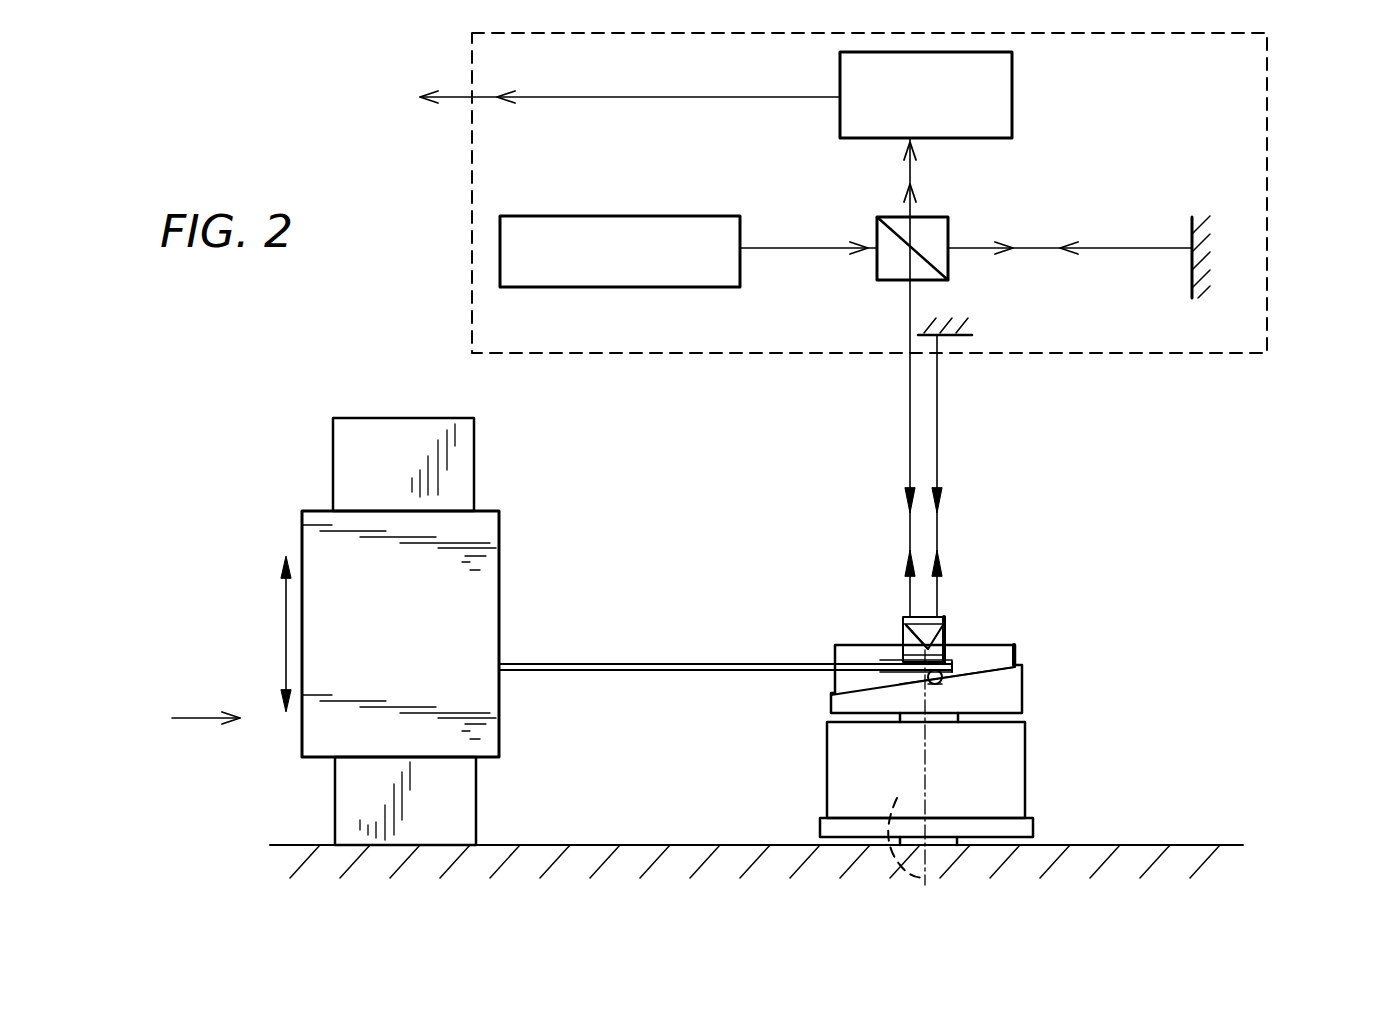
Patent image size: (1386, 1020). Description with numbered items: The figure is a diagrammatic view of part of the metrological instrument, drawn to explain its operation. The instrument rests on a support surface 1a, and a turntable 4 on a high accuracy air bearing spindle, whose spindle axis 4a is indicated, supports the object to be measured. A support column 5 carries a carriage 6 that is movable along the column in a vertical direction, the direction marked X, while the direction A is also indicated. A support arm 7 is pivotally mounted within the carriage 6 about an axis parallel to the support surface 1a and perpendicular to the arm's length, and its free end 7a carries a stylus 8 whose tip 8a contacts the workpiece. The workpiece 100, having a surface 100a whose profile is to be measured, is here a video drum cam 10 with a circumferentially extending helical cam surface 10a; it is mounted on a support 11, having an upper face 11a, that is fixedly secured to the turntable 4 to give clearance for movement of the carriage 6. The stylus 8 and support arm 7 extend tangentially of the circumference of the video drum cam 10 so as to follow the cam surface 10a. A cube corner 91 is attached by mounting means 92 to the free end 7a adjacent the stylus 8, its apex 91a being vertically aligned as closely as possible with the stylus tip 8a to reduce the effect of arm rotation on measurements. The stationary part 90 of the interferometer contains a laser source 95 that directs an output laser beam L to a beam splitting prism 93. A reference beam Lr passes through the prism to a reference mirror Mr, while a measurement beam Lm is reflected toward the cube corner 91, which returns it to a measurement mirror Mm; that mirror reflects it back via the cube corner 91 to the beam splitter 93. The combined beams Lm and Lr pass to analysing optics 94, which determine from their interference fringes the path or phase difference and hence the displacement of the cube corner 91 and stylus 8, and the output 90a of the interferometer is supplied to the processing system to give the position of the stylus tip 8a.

The support surface 1a is at (1183, 843).
The turntable 4 is at (820, 828).
The spindle axis 4a is at (894, 822).
The support column 5 is at (475, 461).
The carriage 6 is at (500, 535).
The support arm 7 is at (722, 680).
The free end of the support arm 7a is at (882, 664).
The stylus 8 is at (940, 672).
The stylus tip 8a is at (947, 655).
The video drum cam 10 is at (1020, 660).
The helical cam surface 10a is at (1025, 672).
The support 11 is at (1010, 778).
The support surface 11a is at (1025, 703).
The stationary part of the interferometer 90 is at (1267, 245).
The output of the interferometer 90a is at (428, 97).
The cube corner 91 is at (898, 623).
The apex of the cube corner 91a is at (935, 640).
The mounting means 92 is at (903, 655).
The beam splitting prism 93 is at (948, 222).
The analysing optics 94 is at (1012, 103).
The laser source 95 is at (692, 213).
The workpiece 100 is at (1027, 647).
The surface of the workpiece 100a is at (987, 677).
The output laser beam L is at (795, 248).
The measurement beam Lm is at (908, 305).
The measurement mirror Mm is at (960, 338).
The reference beam Lr is at (1118, 250).
The reference mirror Mr is at (1192, 260).
The X direction X is at (286, 600).
The direction A is at (194, 720).